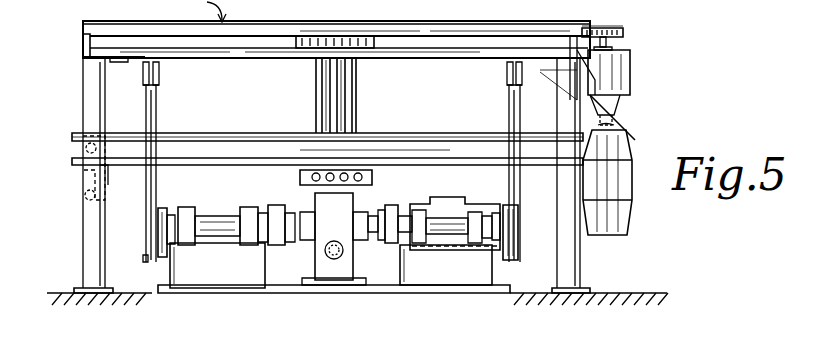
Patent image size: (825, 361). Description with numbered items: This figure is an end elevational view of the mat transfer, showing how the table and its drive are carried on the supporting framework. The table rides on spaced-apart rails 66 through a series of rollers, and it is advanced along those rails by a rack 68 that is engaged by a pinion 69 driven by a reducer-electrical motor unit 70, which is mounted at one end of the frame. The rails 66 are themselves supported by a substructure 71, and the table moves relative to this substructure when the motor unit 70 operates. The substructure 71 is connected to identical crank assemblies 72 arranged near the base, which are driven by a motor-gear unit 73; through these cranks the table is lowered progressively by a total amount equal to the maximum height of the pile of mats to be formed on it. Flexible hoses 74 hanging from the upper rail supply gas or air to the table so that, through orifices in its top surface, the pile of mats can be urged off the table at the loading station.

The rails 66 is at (83, 36).
The rack 68 is at (590, 26).
The pinion 69 is at (624, 32).
The reducer-electrical motor unit 70 is at (626, 192).
The substructure 71 is at (236, 150).
The crank assemblies 72 is at (158, 256).
The motor-gear unit 73 is at (478, 206).
The flexible hoses 74 is at (358, 116).